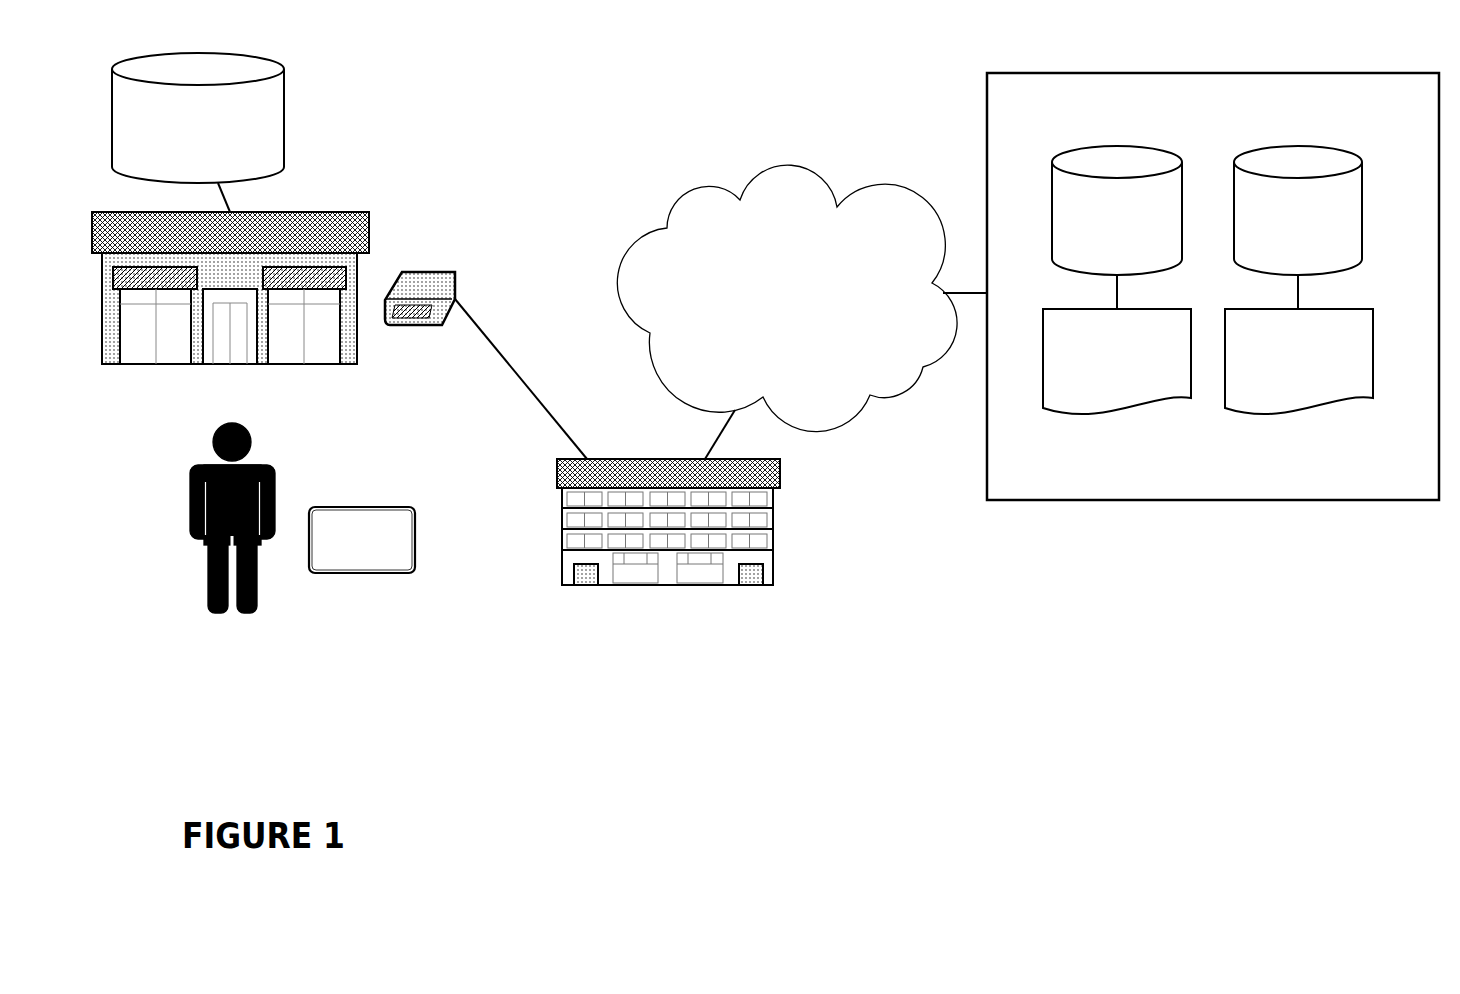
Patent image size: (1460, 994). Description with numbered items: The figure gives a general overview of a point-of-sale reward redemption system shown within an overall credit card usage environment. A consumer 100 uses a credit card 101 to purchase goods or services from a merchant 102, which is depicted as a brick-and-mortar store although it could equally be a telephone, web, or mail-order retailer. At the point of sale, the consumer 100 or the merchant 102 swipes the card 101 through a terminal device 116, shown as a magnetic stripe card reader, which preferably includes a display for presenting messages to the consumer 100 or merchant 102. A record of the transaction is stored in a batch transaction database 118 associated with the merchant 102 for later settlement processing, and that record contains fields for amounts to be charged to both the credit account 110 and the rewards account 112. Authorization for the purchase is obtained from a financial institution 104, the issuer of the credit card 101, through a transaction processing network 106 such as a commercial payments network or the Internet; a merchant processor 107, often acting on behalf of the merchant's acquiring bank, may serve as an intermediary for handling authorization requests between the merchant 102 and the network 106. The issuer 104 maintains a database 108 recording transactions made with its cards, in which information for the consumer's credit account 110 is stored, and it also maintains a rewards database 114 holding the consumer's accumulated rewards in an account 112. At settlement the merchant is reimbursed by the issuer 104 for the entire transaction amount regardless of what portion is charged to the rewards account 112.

The consumer 100 is at (208, 542).
The credit card 101 is at (408, 575).
The merchant 102 is at (137, 363).
The financial institution 104 is at (1018, 500).
The transaction processing network 106 is at (813, 177).
The merchant processor 107 is at (557, 465).
The database 108 is at (1330, 147).
The credit account 110 is at (1373, 367).
The rewards account 112 is at (1043, 367).
The rewards database 114 is at (1066, 152).
The terminal device 116 is at (422, 268).
The batch transaction database 118 is at (284, 118).